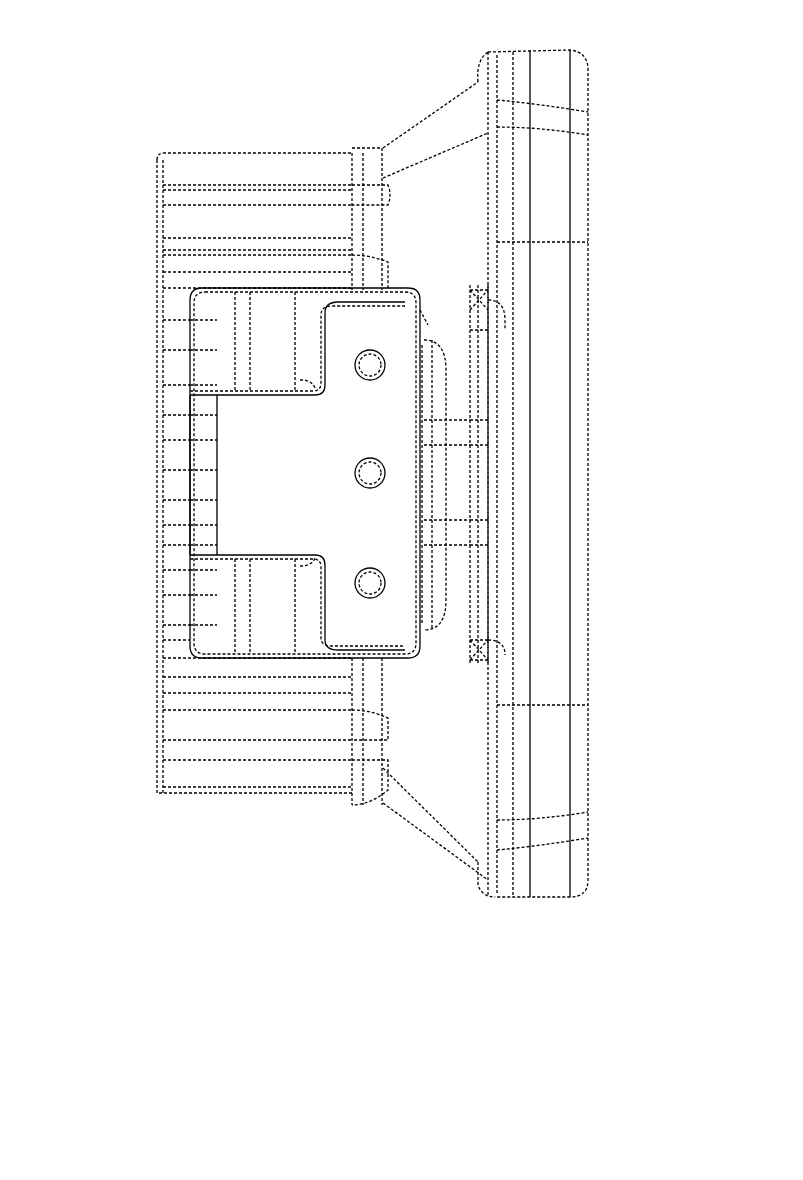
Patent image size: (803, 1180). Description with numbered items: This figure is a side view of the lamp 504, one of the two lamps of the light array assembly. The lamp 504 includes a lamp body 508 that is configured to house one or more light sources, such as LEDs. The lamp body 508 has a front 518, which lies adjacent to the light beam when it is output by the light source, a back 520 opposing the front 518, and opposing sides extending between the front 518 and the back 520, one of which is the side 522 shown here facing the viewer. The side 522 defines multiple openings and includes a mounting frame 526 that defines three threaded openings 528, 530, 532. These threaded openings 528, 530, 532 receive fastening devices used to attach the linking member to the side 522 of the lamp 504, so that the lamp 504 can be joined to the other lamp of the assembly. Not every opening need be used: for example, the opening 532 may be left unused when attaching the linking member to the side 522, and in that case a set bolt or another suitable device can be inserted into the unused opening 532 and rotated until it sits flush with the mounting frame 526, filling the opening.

The lamp 504 is at (153, 48).
The lamp body 508 is at (190, 116).
The front 518 is at (587, 380).
The back 520 is at (155, 290).
The side 522 is at (312, 222).
The mounting frame 526 is at (265, 500).
The threaded opening 528 is at (370, 368).
The threaded opening 530 is at (370, 583).
The threaded opening 532 is at (370, 473).